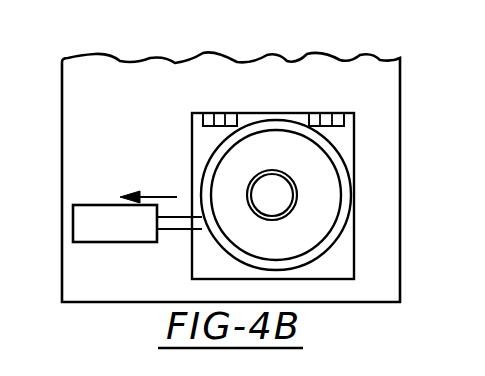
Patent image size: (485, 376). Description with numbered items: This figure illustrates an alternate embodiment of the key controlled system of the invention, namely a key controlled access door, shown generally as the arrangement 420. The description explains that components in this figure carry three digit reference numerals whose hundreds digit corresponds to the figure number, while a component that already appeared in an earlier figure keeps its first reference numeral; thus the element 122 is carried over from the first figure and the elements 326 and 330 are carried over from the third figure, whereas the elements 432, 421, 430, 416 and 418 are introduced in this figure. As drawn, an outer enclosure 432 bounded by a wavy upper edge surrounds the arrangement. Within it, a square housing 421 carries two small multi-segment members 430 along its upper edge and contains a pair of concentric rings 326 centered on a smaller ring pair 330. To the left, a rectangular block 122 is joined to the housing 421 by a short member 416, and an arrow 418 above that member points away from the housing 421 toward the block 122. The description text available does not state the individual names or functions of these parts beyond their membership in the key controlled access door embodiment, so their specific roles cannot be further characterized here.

The disk cartridge assembly 420 is at (94, 25).
The housing 432 is at (62, 82).
The disk enclosure 421 is at (192, 132).
The connector terminals 430 is at (309, 113).
The disk 326 is at (266, 258).
The hub 330 is at (272, 221).
The actuator motor 122 is at (118, 243).
The drive shaft 416 is at (178, 231).
The direction of motion 418 is at (161, 190).